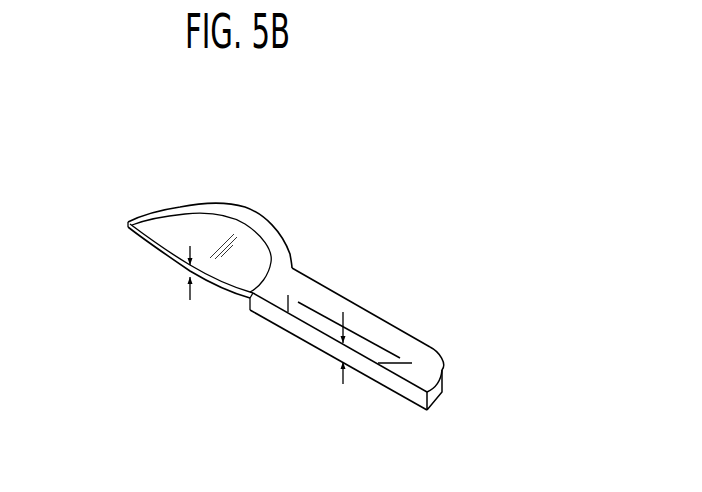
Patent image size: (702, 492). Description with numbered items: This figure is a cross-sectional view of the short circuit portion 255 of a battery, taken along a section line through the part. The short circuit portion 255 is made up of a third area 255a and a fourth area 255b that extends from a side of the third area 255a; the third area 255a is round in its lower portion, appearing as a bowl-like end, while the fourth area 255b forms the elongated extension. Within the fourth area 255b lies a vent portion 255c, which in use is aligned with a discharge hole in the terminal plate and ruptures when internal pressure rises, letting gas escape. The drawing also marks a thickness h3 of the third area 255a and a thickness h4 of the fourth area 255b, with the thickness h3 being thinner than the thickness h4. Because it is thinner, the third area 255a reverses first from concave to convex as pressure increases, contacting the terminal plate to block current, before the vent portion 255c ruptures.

The short circuit portion 255 is at (287, 190).
The third area 255a is at (195, 252).
The fourth area 255b is at (288, 323).
The vent portion 255c is at (380, 357).
The thickness of the third area h3 is at (190, 275).
The thickness of the fourth area h4 is at (340, 353).